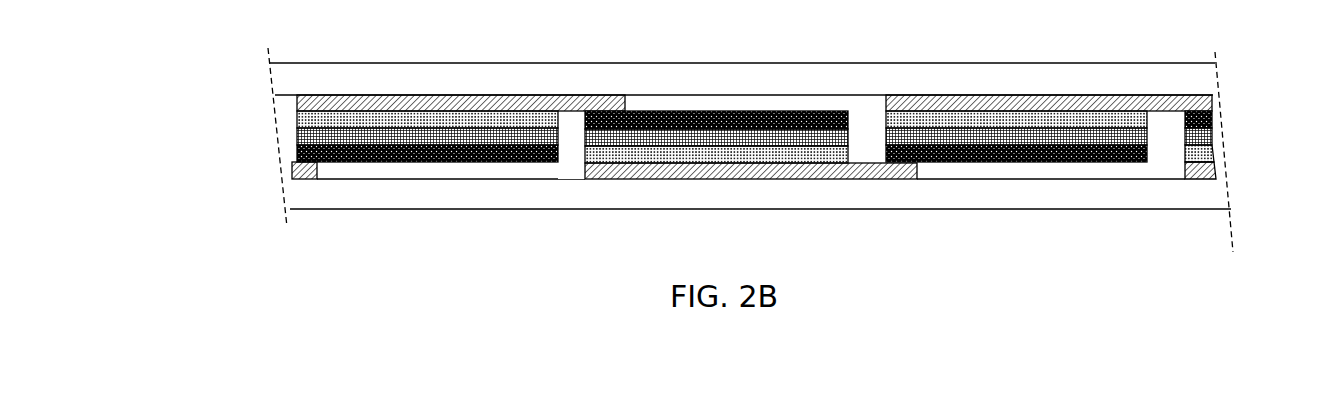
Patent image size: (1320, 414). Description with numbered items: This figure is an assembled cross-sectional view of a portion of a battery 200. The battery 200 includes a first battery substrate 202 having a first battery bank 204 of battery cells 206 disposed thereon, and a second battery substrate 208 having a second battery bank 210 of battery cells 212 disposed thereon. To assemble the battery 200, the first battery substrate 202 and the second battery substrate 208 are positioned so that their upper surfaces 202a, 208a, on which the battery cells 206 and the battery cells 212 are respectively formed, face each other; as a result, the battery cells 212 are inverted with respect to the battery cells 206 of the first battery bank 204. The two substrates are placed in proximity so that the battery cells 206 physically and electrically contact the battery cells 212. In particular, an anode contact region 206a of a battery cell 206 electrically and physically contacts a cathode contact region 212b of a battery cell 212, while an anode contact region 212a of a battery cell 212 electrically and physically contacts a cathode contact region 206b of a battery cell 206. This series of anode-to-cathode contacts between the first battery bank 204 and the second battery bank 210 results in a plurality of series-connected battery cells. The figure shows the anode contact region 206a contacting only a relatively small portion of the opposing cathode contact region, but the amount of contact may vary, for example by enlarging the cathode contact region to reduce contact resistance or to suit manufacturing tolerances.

The battery 200 is at (761, 351).
The first battery substrate 202 is at (751, 195).
The upper surface of first battery substrate 202a is at (560, 178).
The first battery bank 204 is at (250, 110).
The battery cell 206 is at (298, 181).
The anode contact region 206a is at (711, 110).
The cathode contact region 206b is at (288, 153).
The second battery substrate 208 is at (742, 79).
The upper surface of second battery substrate 208a is at (858, 96).
The second battery bank 210 is at (1242, 93).
The battery cell 212 is at (432, 88).
The anode contact region 212a is at (435, 164).
The cathode contact region 212b is at (600, 105).